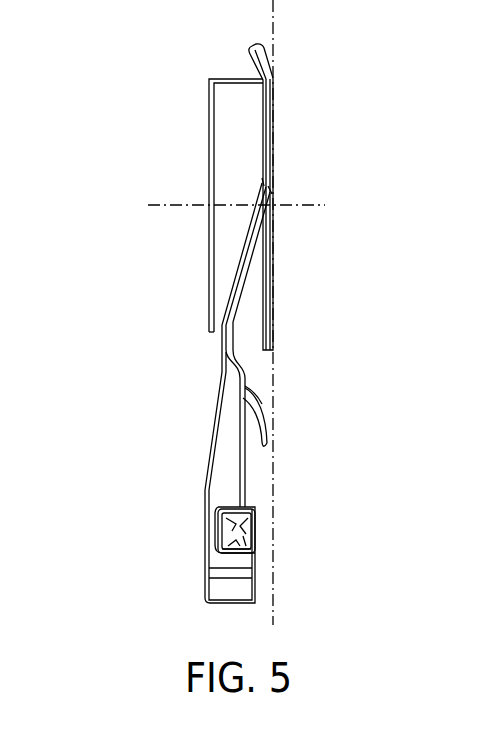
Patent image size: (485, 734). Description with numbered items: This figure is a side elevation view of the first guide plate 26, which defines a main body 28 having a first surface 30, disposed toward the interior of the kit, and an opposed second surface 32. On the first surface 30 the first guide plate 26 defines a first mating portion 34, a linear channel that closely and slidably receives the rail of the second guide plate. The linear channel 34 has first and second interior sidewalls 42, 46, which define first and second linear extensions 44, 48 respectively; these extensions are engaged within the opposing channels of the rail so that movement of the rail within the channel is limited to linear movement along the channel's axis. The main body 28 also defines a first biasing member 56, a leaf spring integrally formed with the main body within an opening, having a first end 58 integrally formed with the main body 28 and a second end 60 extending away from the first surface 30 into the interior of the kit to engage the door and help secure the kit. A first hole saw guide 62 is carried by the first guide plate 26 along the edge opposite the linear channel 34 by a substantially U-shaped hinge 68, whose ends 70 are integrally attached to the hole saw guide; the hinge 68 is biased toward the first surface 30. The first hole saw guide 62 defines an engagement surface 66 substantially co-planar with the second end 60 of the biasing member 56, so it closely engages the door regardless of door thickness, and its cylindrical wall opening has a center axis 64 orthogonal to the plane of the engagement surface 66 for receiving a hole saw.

The first guide plate 26 is at (140, 38).
The main body 28 is at (207, 524).
The first surface 30 is at (245, 487).
The second surface 32 is at (212, 455).
The first mating portion 34 is at (250, 535).
The first interior sidewall 42 is at (253, 546).
The first linear extension 44 is at (225, 551).
The second interior sidewall 46 is at (247, 523).
The second linear extension 48 is at (215, 509).
The first biasing member 56 is at (255, 400).
The first end 58 is at (245, 391).
The second end 60 is at (268, 448).
The first hole saw guide 62 is at (209, 92).
The center axis 64 is at (180, 204).
The engagement surface 66 is at (273, 100).
The hinge 68 is at (238, 273).
The end 70 is at (270, 192).